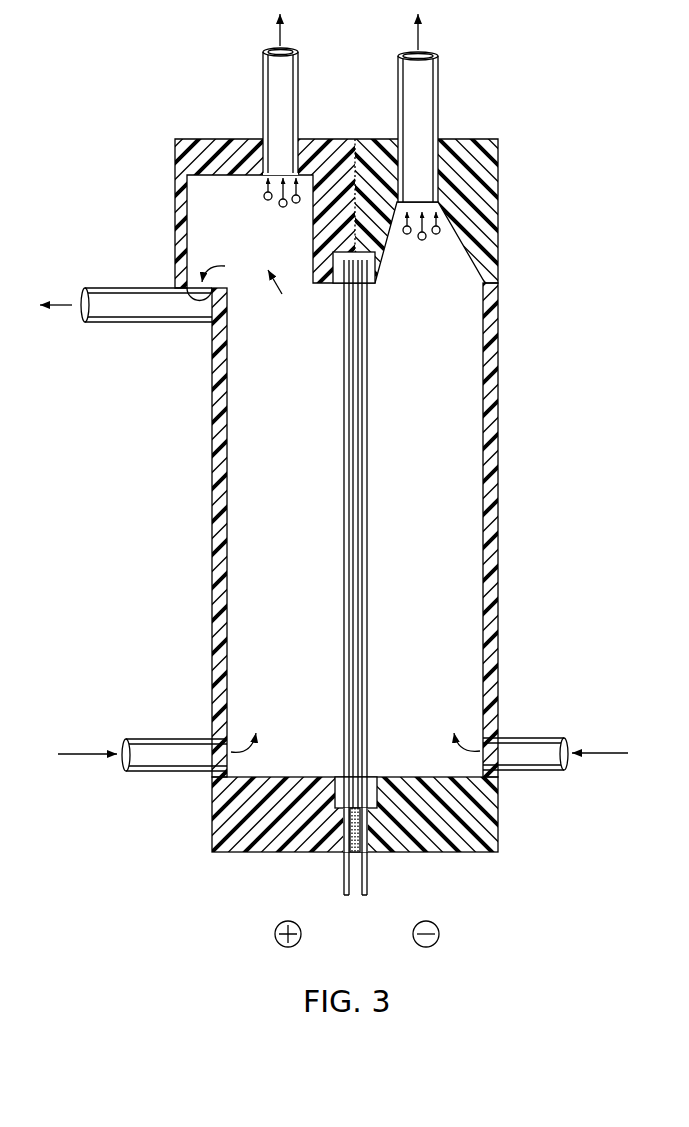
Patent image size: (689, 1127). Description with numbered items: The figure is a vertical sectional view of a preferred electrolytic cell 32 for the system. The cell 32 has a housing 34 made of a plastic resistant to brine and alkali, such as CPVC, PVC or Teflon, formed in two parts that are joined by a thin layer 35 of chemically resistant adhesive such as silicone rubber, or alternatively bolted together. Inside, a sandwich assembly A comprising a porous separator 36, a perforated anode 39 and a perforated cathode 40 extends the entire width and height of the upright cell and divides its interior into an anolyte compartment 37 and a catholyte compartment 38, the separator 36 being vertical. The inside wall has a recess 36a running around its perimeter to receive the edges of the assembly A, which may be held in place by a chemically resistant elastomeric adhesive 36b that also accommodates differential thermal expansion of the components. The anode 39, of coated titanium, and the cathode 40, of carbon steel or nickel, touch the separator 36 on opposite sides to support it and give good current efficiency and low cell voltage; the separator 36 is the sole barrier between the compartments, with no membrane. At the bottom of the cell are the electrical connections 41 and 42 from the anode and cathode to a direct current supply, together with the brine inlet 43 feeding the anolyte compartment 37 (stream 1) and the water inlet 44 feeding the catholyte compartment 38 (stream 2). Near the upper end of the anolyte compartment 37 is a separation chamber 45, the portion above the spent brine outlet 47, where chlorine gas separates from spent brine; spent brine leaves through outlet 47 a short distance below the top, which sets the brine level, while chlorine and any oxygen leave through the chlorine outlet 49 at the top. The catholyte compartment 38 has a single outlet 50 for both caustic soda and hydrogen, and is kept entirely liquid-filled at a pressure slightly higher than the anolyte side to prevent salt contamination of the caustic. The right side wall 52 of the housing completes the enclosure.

The first inlet flow 1 is at (78, 753).
The second inlet flow 2 is at (608, 752).
The sandwich assembly A is at (338, 731).
The cell 32 is at (500, 860).
The housing 34 is at (498, 604).
The thin layer of adhesive 35 is at (357, 835).
The porous separator 36 is at (355, 412).
The recess 36a is at (337, 800).
The elastomeric adhesive 36b is at (342, 270).
The anolyte compartment 37 is at (308, 545).
The catholyte compartment 38 is at (423, 577).
The perforated anode 39 is at (344, 480).
The perforated cathode 40 is at (368, 453).
The electrical connection 41 is at (344, 873).
The electrical connection 42 is at (368, 876).
The brine inlet 43 is at (148, 773).
The water inlet 44 is at (557, 771).
The separation chamber 45 is at (243, 228).
The spent brine outlet 47 is at (64, 303).
The chlorine outlet 49 is at (263, 95).
The outlet 50 is at (440, 102).
The left side wall 52 is at (228, 647).